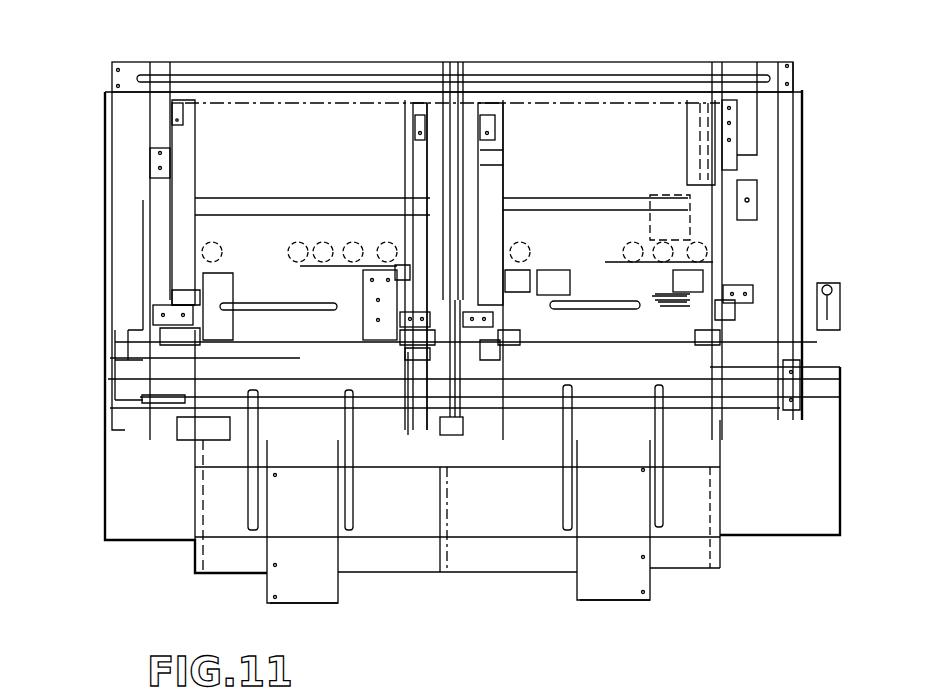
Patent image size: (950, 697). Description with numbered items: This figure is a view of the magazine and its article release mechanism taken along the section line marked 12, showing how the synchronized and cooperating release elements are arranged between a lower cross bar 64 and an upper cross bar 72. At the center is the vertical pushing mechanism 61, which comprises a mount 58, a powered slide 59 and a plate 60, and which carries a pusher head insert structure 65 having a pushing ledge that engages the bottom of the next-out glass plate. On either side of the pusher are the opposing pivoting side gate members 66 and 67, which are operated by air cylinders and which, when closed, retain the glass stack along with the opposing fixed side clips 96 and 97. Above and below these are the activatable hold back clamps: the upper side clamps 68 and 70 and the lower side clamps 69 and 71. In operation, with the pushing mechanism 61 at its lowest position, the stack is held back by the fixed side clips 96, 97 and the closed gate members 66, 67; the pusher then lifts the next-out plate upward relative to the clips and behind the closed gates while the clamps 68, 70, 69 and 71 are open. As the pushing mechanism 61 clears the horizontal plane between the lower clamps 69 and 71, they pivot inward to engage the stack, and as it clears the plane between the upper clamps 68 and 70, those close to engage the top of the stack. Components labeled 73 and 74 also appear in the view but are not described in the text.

The section line for FIG. 12 is at (830, 100).
The mount 58 is at (192, 560).
The powered slide 59 is at (300, 618).
The plate 60 is at (252, 585).
The vertical pushing mechanism 61 is at (240, 305).
The lower cross bar 64 is at (200, 447).
The pusher head insert structure 65 is at (580, 268).
The pivoting side gate member 66 is at (210, 143).
The pivoting side gate member 67 is at (390, 138).
The upper side clamp 68 is at (195, 278).
The lower side clamp 69 is at (195, 335).
The upper side clamp 70 is at (395, 255).
The lower side clamp 71 is at (405, 355).
The upper cross bar 72 is at (392, 62).
The stop 73 is at (190, 113).
The actuator rod 74 is at (410, 360).
The fixed side clip 96 is at (185, 312).
The fixed side clip 97 is at (398, 315).